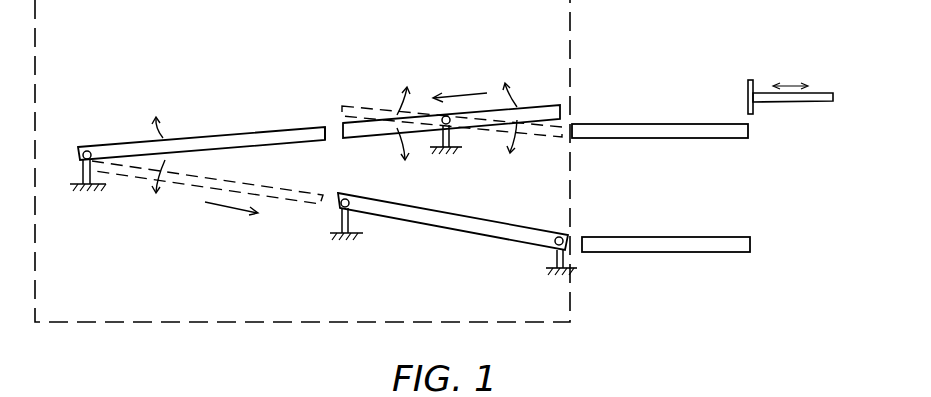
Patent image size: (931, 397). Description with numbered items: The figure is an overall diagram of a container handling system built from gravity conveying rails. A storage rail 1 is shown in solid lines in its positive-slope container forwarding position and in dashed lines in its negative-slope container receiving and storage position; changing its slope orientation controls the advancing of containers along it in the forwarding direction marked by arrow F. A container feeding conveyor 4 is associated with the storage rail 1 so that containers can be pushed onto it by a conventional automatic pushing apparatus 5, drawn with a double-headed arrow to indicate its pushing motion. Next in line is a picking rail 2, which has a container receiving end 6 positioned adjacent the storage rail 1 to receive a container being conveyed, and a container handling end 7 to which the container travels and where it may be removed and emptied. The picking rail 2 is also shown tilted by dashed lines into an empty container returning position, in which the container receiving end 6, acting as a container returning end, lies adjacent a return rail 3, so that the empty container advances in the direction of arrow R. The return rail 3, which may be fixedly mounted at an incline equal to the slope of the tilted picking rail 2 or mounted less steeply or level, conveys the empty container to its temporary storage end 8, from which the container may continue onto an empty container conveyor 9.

The storage rail 1 is at (493, 110).
The picking rail 2 is at (222, 138).
The return rail 3 is at (485, 229).
The container feeding conveyor 4 is at (735, 138).
The automatic pushing apparatus 5 is at (753, 82).
The container receiving end 6 is at (323, 127).
The container handling end 7 is at (80, 147).
The temporary storage end 8 is at (567, 235).
The empty container conveyor 9 is at (733, 252).